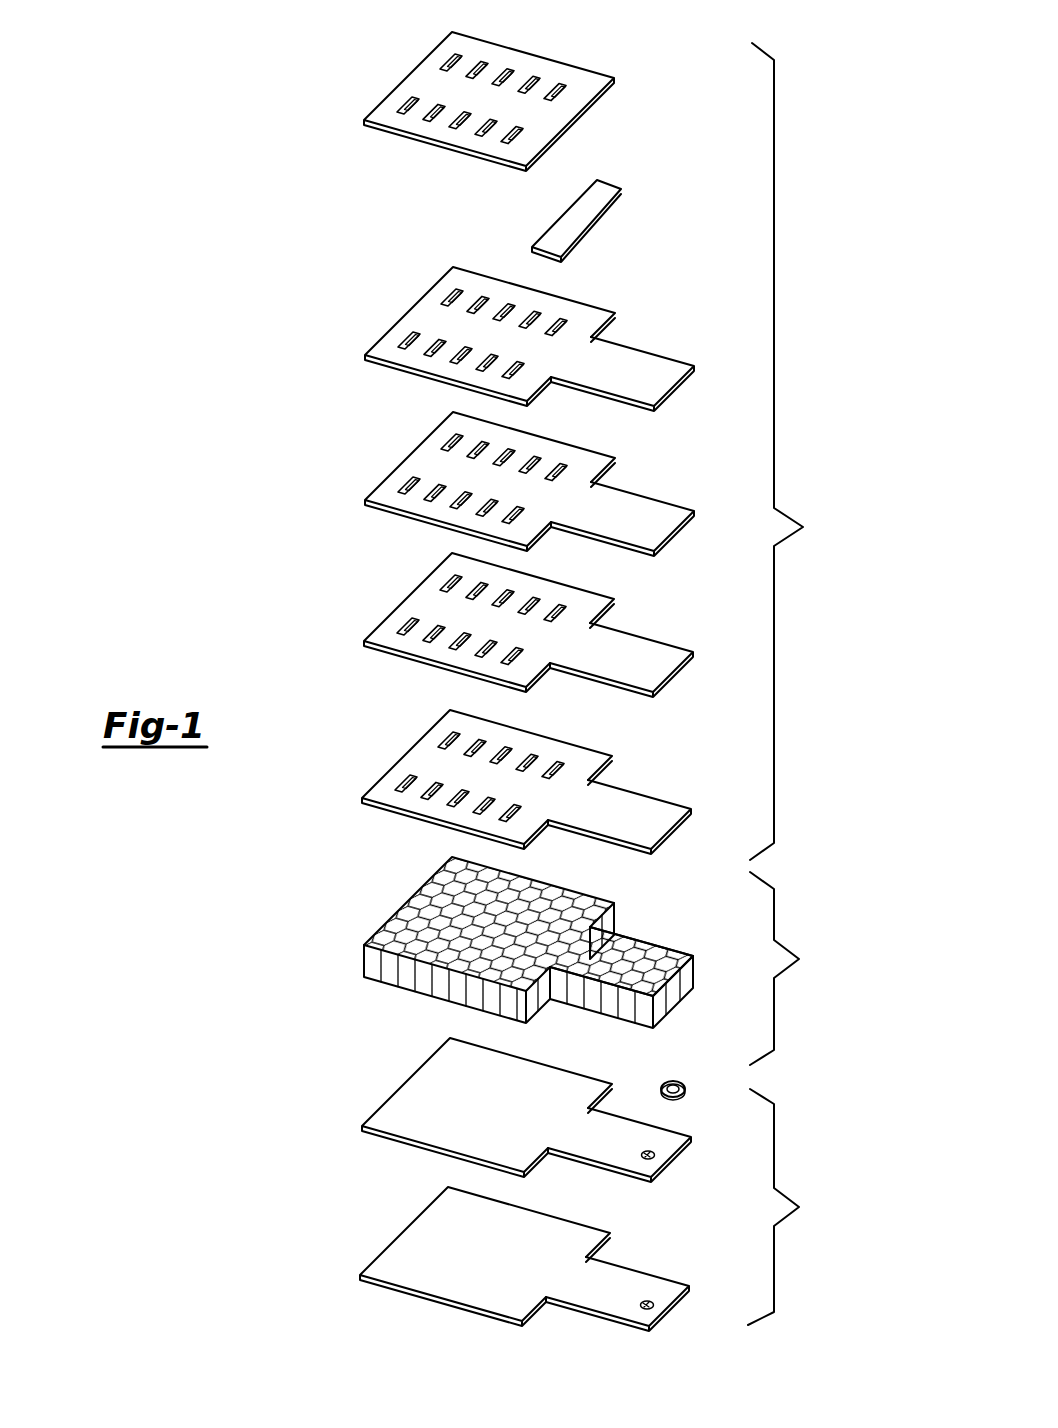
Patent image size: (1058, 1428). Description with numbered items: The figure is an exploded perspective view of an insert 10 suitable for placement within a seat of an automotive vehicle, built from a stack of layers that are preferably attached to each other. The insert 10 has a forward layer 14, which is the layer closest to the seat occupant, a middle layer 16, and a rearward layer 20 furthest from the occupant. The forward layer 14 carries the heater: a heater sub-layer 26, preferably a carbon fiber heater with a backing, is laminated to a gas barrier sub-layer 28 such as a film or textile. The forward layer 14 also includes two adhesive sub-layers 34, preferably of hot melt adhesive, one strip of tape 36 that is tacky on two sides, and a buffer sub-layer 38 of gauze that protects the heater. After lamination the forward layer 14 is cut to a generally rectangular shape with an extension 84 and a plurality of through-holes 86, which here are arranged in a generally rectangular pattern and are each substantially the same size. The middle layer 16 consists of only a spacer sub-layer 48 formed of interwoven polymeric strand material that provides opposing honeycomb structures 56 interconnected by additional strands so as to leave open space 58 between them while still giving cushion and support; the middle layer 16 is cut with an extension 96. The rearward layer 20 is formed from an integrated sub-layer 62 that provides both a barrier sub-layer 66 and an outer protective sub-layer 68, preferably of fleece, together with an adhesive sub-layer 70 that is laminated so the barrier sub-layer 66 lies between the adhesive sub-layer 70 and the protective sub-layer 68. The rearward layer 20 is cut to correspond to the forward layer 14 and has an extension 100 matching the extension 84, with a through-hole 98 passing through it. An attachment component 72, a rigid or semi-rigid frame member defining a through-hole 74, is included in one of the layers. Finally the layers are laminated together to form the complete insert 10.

The insert 10 is at (823, 92).
The forward layer 14 is at (791, 451).
The middle layer 16 is at (791, 968).
The rearward layer 20 is at (789, 1207).
The heater sub-layer 26 is at (428, 312).
The gas barrier sub-layer 28 is at (383, 633).
The adhesive sub-layer 34 is at (580, 472).
The strip of tape 36 is at (587, 213).
The buffer sub-layer 38 is at (527, 65).
The spacer sub-layer 48 is at (345, 888).
The honeycomb structures 56 is at (412, 940).
The open space 58 is at (423, 977).
The integrated sub-layer 62 is at (345, 1248).
The barrier sub-layer 66 is at (418, 1248).
The protective sub-layer 68 is at (393, 1298).
The adhesive sub-layer 70 is at (525, 1097).
The attachment component 72 is at (710, 1108).
The through-hole 74 is at (674, 1077).
The extension 84 is at (653, 382).
The through-holes 86 is at (410, 100).
The extension 96 is at (645, 973).
The through-hole 98 is at (650, 1152).
The extension 100 is at (677, 1145).